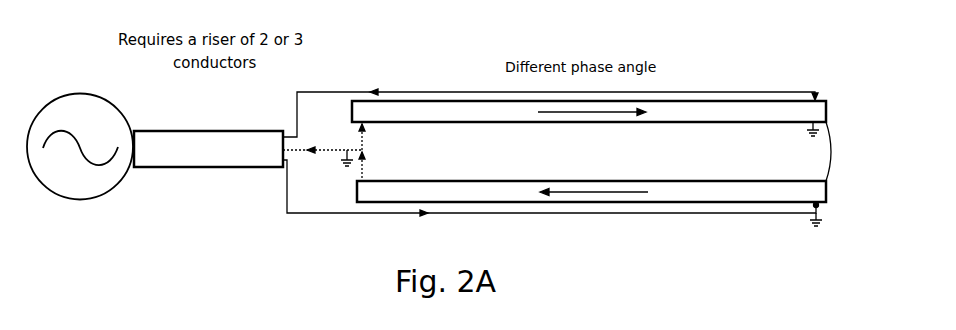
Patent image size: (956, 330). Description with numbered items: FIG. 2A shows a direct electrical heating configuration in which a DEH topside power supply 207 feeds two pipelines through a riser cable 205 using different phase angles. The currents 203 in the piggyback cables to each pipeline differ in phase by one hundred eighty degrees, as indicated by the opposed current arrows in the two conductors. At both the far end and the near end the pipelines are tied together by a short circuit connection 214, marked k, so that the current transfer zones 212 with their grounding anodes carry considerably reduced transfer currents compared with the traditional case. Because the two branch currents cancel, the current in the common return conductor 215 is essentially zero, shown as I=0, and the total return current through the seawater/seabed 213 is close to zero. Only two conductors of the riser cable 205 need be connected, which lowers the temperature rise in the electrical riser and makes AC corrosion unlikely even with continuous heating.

The DEH topside power supply 207 is at (80, 136).
The riser cable 205 is at (208, 180).
The current in piggyback cable 203 is at (554, 154).
The seawater/seabed 213 is at (521, 155).
The short circuit connection 214 is at (599, 151).
The current transfer zone 212 is at (576, 184).
The current in common return conductor 215 is at (322, 167).